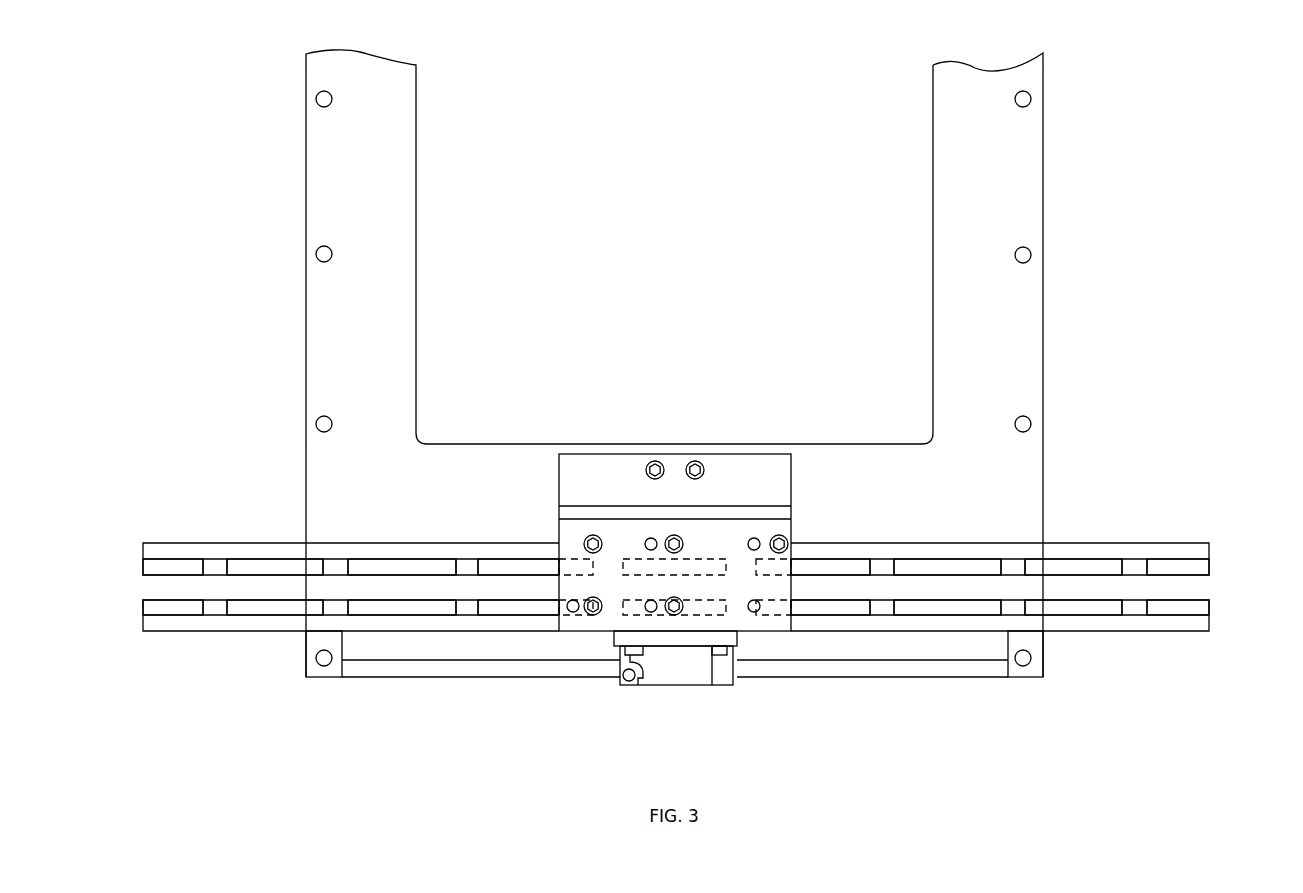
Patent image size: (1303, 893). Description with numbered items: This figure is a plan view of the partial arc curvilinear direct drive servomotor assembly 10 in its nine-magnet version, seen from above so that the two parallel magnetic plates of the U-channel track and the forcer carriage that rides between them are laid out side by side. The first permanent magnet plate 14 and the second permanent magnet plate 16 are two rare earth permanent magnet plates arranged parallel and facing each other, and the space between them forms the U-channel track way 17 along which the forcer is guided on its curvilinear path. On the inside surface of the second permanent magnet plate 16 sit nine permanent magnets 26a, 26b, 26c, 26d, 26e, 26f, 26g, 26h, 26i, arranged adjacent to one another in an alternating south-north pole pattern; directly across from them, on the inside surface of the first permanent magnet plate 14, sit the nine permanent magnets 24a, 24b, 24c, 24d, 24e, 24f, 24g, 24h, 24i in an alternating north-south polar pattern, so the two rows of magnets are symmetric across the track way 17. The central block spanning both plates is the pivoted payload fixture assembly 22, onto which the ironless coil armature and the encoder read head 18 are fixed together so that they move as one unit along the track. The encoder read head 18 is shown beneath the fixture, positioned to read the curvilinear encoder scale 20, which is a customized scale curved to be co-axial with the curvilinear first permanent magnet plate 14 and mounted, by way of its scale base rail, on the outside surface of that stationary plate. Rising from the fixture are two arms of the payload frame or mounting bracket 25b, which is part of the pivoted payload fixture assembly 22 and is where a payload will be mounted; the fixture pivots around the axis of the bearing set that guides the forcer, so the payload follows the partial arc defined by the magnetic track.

The partial arc curvilinear direct drive servomotor assembly 10 is at (1182, 522).
The first permanent magnet plate 14 is at (177, 632).
The second permanent magnet plate 16 is at (177, 545).
The U-channel track way 17 is at (127, 585).
The encoder read head 18 is at (672, 683).
The curvilinear encoder scale 20 is at (908, 672).
The pivoted payload fixture assembly 22 is at (737, 637).
The permanent magnet 24a is at (1210, 603).
The permanent magnet 24b is at (1100, 608).
The permanent magnet 24c is at (965, 608).
The permanent magnet 24d is at (835, 608).
The permanent magnet 24e is at (623, 610).
The permanent magnet 24f is at (515, 605).
The permanent magnet 24g is at (377, 605).
The permanent magnet 24h is at (242, 607).
The permanent magnet 24i is at (143, 608).
The payload frame 25b is at (1043, 164).
The permanent magnet 26a is at (1205, 567).
The permanent magnet 26b is at (1082, 565).
The permanent magnet 26c is at (967, 567).
The permanent magnet 26d is at (843, 563).
The permanent magnet 26e is at (635, 563).
The permanent magnet 26f is at (532, 565).
The permanent magnet 26g is at (370, 565).
The permanent magnet 26h is at (255, 565).
The permanent magnet 26i is at (143, 568).